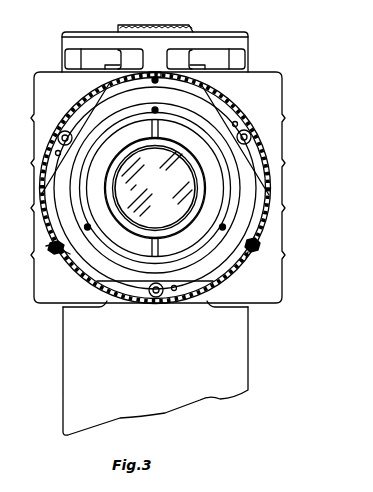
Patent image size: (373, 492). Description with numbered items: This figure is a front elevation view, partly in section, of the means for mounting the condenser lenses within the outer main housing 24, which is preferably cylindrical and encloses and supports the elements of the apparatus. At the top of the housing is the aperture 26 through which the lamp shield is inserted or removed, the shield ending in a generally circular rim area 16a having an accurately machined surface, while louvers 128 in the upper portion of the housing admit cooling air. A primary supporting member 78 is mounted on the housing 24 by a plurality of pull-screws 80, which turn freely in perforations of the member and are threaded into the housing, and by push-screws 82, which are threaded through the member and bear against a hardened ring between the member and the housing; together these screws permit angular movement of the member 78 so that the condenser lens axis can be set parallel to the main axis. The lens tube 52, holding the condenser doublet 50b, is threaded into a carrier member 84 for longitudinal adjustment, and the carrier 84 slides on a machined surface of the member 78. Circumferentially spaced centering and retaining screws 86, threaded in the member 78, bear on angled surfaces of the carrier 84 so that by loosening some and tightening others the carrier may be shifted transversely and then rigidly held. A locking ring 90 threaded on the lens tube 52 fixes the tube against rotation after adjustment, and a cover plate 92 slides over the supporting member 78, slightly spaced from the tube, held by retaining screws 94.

The aperture 26 is at (93, 28).
The rim area 16a is at (194, 28).
The louvers 128 is at (237, 64).
The primary supporting member 78 is at (85, 116).
The locking ring 90 is at (113, 134).
The push-screws 82 is at (52, 152).
The cover plate 92 is at (232, 105).
The doublet 50b is at (170, 187).
The lens tube 52 is at (190, 204).
The centering and retaining screws 86 is at (58, 256).
The carrier member 84 is at (120, 256).
The pull-screws 80 is at (161, 296).
The retaining screws 94 is at (253, 253).
The main housing 24 is at (161, 373).